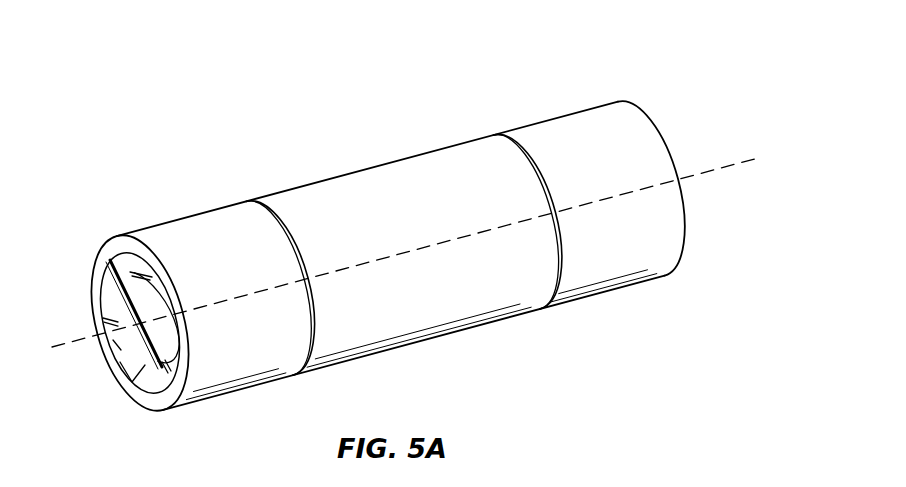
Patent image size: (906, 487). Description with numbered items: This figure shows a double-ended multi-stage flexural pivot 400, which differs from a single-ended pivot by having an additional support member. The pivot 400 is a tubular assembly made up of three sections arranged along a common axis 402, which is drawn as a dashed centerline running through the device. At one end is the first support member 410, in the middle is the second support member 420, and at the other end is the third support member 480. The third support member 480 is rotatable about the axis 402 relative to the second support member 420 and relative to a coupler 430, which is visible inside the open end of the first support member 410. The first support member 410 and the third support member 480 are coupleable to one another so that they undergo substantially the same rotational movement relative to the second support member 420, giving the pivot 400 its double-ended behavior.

The multi-stage flexural pivot 400 is at (256, 70).
The axis 402 is at (732, 158).
The first support member 410 is at (190, 232).
The second support member 420 is at (378, 187).
The coupler 430 is at (140, 355).
The third support member 480 is at (573, 127).